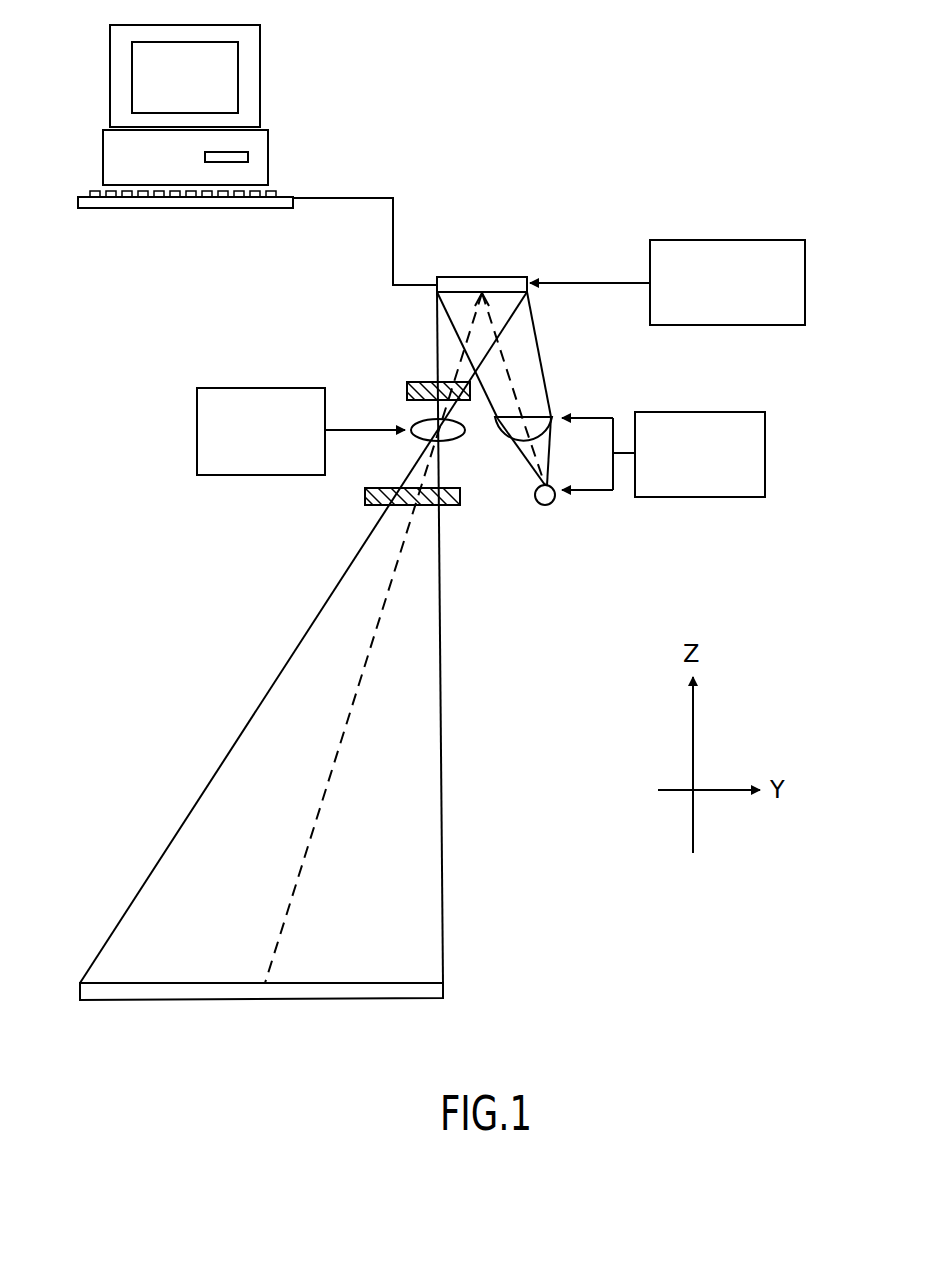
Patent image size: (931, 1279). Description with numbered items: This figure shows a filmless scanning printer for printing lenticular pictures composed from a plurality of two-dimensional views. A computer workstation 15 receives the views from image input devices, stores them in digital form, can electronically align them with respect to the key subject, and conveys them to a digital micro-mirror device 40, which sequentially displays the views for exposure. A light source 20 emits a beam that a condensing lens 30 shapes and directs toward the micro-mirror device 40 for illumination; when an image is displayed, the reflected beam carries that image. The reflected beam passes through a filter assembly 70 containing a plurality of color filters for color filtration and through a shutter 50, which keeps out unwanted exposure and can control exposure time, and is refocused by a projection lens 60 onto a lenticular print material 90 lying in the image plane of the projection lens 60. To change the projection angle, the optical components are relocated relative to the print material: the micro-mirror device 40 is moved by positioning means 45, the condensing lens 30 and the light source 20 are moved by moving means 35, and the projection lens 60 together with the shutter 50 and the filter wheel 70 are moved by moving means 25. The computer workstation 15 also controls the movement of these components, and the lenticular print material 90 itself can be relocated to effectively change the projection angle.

The computer workstation 15 is at (92, 149).
The light source 20 is at (541, 504).
The moving means 25 is at (212, 467).
The condensing lens 30 is at (533, 411).
The moving means 35 is at (748, 487).
The digital micro-mirror device 40 is at (505, 278).
The positioning means 45 is at (786, 318).
The shutter 50 is at (366, 494).
The projection lens 60 is at (445, 441).
The filter assembly 70 is at (410, 383).
The lenticular print material 90 is at (100, 1000).